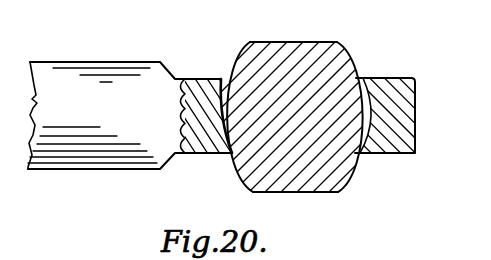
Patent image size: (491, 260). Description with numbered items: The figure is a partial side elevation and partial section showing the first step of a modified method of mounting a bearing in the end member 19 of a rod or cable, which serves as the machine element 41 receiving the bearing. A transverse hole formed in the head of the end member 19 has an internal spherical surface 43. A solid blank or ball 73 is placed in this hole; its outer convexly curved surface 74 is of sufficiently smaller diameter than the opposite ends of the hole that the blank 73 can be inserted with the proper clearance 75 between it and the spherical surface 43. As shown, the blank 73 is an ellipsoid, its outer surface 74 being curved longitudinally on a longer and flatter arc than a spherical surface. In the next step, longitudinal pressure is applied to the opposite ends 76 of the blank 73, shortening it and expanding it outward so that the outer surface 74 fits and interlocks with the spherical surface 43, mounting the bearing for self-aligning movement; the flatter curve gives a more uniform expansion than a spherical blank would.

The end member 19 is at (96, 69).
The machine element 41 is at (403, 125).
The internal spherical surface 43 is at (357, 155).
The solid blank or ball 73 is at (343, 62).
The outer convexly curved surface 74 is at (236, 168).
The clearance 75 is at (221, 94).
The opposite ends 76 is at (294, 36).